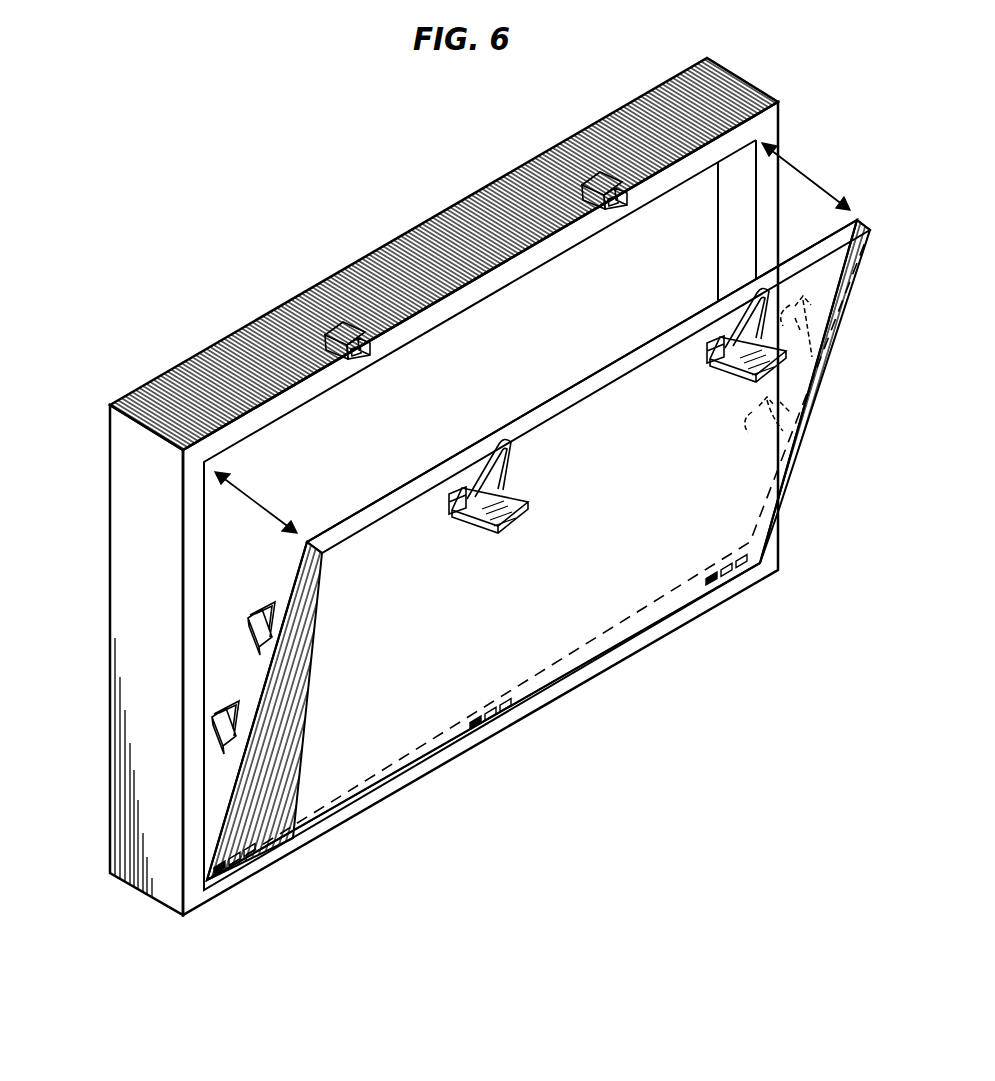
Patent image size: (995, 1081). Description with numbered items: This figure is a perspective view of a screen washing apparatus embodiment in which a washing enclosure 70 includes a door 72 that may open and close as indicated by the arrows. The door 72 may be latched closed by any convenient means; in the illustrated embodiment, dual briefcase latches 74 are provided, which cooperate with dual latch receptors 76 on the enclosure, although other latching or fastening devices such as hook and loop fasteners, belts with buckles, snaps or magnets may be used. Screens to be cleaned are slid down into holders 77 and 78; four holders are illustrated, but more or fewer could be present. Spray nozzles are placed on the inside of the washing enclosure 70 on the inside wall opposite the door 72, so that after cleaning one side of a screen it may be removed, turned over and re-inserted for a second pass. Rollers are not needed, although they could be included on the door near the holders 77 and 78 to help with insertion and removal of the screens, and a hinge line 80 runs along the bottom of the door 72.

The washing enclosure 70 is at (243, 328).
The door 72 is at (580, 381).
The briefcase latch 74 is at (738, 366).
The latch receptor 76 is at (363, 327).
The holder 77 is at (217, 720).
The holder 78 is at (815, 380).
The hinge 80 is at (497, 723).